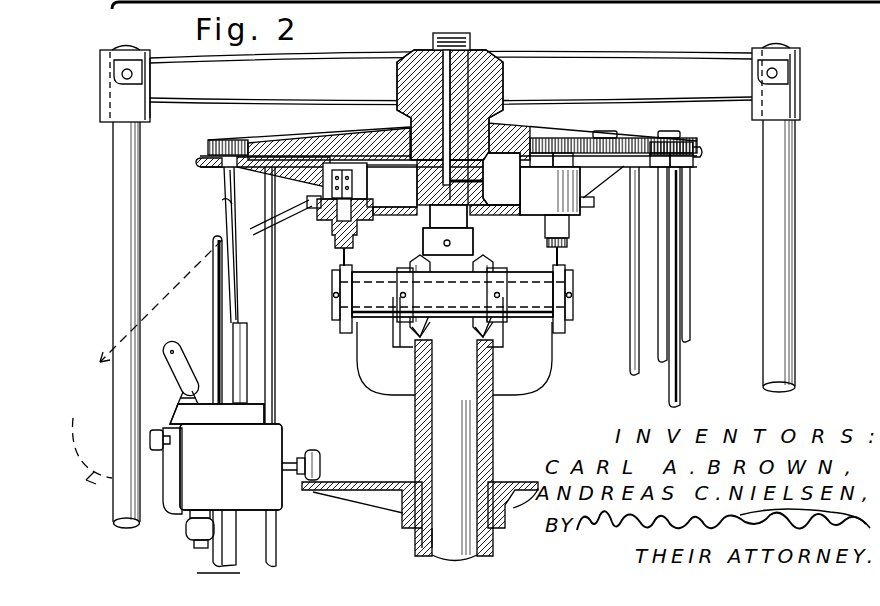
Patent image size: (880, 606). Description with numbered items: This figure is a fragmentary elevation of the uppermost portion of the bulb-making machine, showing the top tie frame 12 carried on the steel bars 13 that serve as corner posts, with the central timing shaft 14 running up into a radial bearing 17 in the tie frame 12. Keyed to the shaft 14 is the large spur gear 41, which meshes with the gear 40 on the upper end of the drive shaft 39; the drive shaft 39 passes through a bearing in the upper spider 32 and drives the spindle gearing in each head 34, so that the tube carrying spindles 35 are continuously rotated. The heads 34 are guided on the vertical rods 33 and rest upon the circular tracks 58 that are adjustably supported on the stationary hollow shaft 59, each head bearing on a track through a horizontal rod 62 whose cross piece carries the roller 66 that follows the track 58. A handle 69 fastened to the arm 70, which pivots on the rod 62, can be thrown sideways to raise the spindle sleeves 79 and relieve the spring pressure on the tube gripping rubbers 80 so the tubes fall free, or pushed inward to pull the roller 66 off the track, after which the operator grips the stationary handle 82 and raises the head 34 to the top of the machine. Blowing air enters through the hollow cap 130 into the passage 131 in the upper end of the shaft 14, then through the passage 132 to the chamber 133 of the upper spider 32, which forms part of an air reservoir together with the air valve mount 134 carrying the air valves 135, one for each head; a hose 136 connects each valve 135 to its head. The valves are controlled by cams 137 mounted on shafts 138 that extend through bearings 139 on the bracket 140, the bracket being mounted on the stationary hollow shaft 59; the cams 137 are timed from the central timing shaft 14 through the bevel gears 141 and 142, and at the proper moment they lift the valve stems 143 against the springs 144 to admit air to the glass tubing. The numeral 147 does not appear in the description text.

The upper or top tie frame 12 is at (679, 67).
The steel bars 13 is at (115, 191).
The central timing shaft 14 is at (460, 84).
The radial bearing 17 is at (422, 63).
The upper spider 32 is at (207, 173).
The vertical rods 33 is at (226, 292).
The head 34 is at (281, 432).
The tube carrying spindles 35 is at (196, 545).
The drive shaft 39 is at (223, 206).
The gear 40 is at (208, 147).
The large spur gear 41 is at (285, 146).
The circular tracks 58 is at (320, 483).
The stationary hollow shaft 59 is at (428, 543).
The horizontal rod 62 is at (284, 459).
The roller 66 is at (316, 452).
The handle 69 is at (174, 342).
The arm 70 is at (180, 385).
The spindle sleeves 79 is at (190, 516).
The tube gripping rubbers 80 is at (189, 532).
The stationary handle 82 is at (246, 328).
The hollow cap 130 is at (437, 42).
The passage 131 is at (440, 88).
The passage 132 is at (487, 172).
The chamber 133 is at (504, 179).
The air valve mount 134 is at (511, 213).
The air valves 135 is at (324, 224).
The hose 136 is at (247, 228).
The cams 137 is at (345, 333).
The shafts 138 is at (522, 283).
The bearings 139 is at (513, 312).
The bracket 140 is at (528, 386).
The bevel gear 141 is at (428, 256).
The bevel gear 142 is at (487, 323).
The valve stems 143 is at (343, 258).
The springs 144 is at (358, 181).
The knob 147 is at (157, 455).